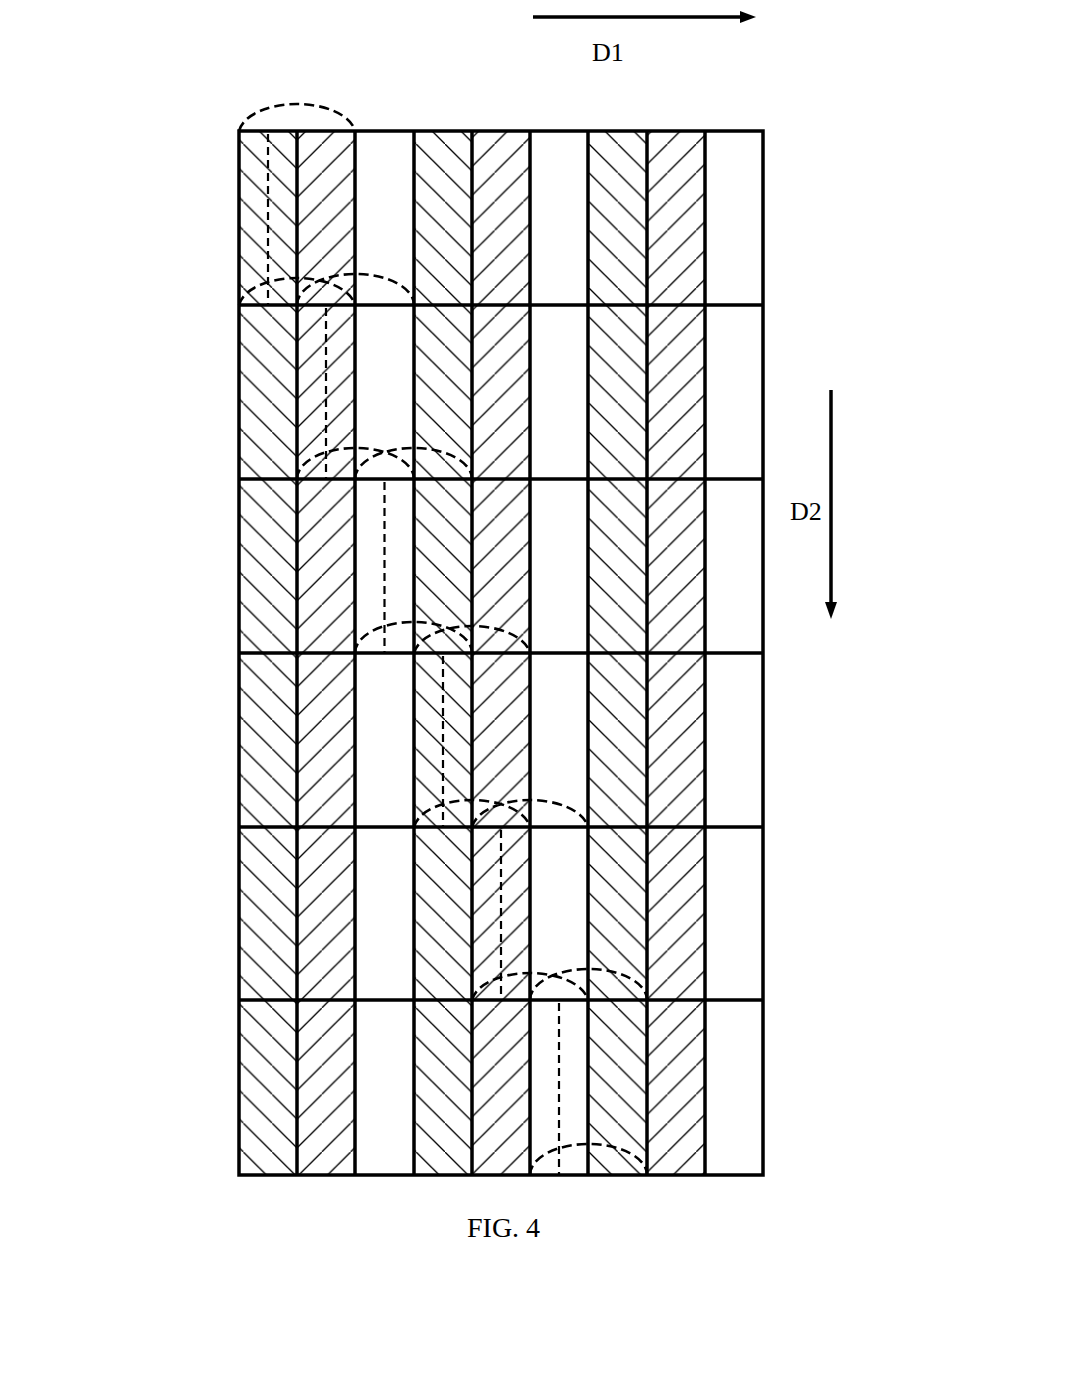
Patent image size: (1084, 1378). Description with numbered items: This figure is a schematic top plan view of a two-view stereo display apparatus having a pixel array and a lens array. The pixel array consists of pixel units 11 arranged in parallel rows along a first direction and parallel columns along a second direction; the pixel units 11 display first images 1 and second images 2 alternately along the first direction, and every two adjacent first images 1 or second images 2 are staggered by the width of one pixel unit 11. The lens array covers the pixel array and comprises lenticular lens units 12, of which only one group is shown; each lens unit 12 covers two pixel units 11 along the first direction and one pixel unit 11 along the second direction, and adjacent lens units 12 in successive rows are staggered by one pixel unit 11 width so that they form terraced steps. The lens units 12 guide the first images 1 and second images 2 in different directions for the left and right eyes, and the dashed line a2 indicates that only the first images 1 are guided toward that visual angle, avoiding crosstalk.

The first image 1 is at (413, 653).
The second image 2 is at (501, 653).
The pixel unit 11 is at (613, 212).
The lens unit 12 is at (376, 277).
The dashed line a2 is at (273, 153).